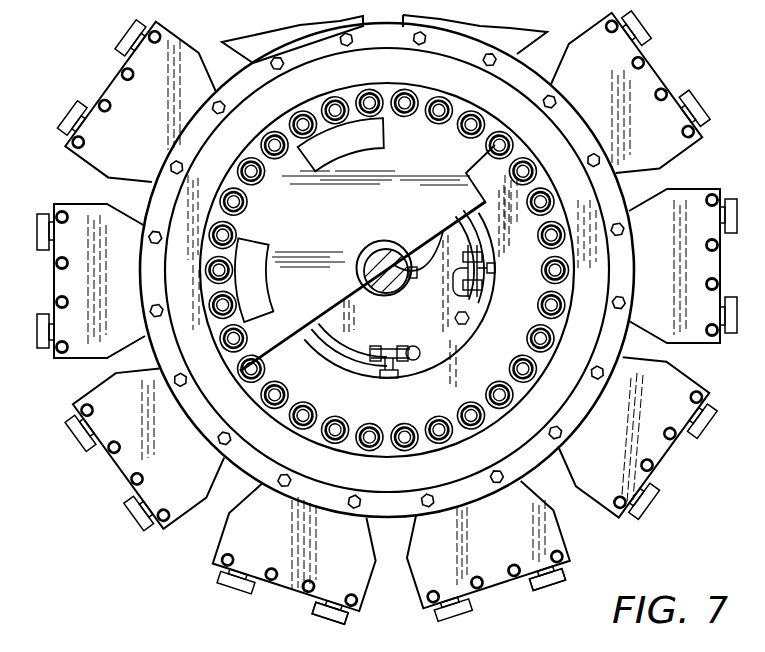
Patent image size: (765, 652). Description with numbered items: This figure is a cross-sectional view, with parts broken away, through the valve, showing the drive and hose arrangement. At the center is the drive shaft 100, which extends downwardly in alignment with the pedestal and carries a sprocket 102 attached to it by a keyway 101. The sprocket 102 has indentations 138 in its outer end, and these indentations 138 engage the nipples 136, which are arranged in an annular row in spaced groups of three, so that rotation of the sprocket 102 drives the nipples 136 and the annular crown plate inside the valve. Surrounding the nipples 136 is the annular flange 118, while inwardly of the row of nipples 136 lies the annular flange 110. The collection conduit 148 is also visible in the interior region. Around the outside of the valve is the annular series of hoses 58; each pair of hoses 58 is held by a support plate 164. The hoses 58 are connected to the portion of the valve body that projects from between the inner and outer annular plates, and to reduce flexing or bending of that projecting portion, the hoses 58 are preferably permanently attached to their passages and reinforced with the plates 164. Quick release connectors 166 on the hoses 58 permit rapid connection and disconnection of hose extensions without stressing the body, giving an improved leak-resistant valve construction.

The hoses 58 is at (319, 598).
The drive shaft 100 is at (403, 284).
The keyway 101 is at (441, 233).
The sprocket 102 is at (390, 216).
The annular flange 110 is at (394, 406).
The annular flange 118 is at (375, 479).
The nipples 136 is at (343, 97).
The indentations 138 is at (240, 369).
The collection conduit 148 is at (329, 328).
The support plate 164 is at (286, 543).
The quick release connectors 166 is at (548, 590).